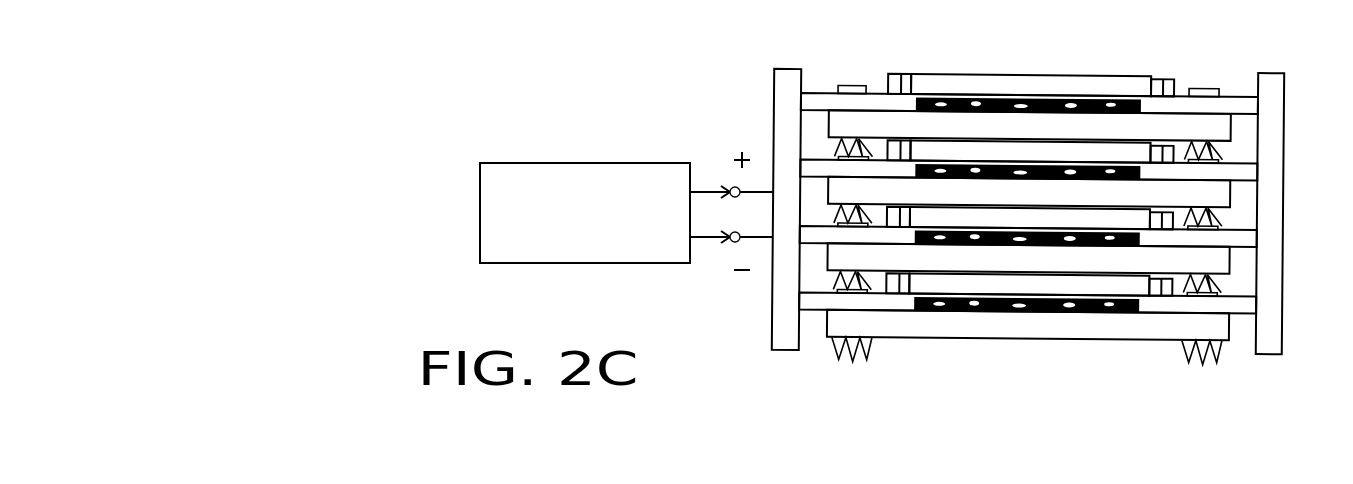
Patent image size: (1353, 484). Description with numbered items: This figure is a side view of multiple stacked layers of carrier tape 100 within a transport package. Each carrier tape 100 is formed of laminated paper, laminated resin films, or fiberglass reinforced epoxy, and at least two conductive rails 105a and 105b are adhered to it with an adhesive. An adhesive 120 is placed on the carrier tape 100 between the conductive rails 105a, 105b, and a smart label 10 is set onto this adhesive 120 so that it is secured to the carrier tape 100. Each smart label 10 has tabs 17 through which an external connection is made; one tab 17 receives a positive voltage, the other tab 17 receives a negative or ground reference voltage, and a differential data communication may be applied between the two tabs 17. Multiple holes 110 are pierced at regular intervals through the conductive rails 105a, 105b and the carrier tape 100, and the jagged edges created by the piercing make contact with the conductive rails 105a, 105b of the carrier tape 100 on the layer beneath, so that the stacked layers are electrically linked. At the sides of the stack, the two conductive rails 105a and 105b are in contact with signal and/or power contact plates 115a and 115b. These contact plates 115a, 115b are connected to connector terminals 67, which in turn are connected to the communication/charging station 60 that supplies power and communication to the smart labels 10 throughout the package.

The smart label 10 is at (1030, 184).
The tabs 17 is at (902, 74).
The communication/charging station 60 is at (538, 163).
The connector terminals 67 is at (733, 187).
The carrier tape 100 is at (964, 136).
The conductive rail 105a is at (815, 93).
The conductive rail 105b is at (1241, 99).
The holes 110 is at (836, 145).
The signal and/or power contact plate 115a is at (773, 91).
The signal and/or power contact plate 115b is at (1285, 98).
The adhesive 120 is at (1045, 99).